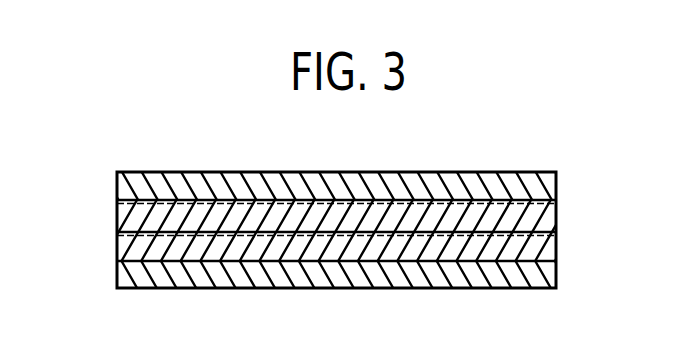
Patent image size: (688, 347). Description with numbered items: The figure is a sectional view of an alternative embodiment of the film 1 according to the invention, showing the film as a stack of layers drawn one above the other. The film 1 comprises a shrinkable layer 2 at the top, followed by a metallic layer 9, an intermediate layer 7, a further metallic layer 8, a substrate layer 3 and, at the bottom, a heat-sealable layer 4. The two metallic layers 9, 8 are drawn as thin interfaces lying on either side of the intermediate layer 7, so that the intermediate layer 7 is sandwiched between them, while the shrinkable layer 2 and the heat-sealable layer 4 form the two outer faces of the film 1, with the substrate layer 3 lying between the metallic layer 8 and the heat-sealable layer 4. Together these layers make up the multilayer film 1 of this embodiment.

The film 1 is at (496, 160).
The shrinkable layer 2 is at (262, 184).
The substrate layer 3 is at (130, 248).
The heat-sealable layer 4 is at (182, 280).
The intermediate layer 7 is at (130, 217).
The metallic layer 8 is at (452, 240).
The metallic layer 9 is at (403, 195).